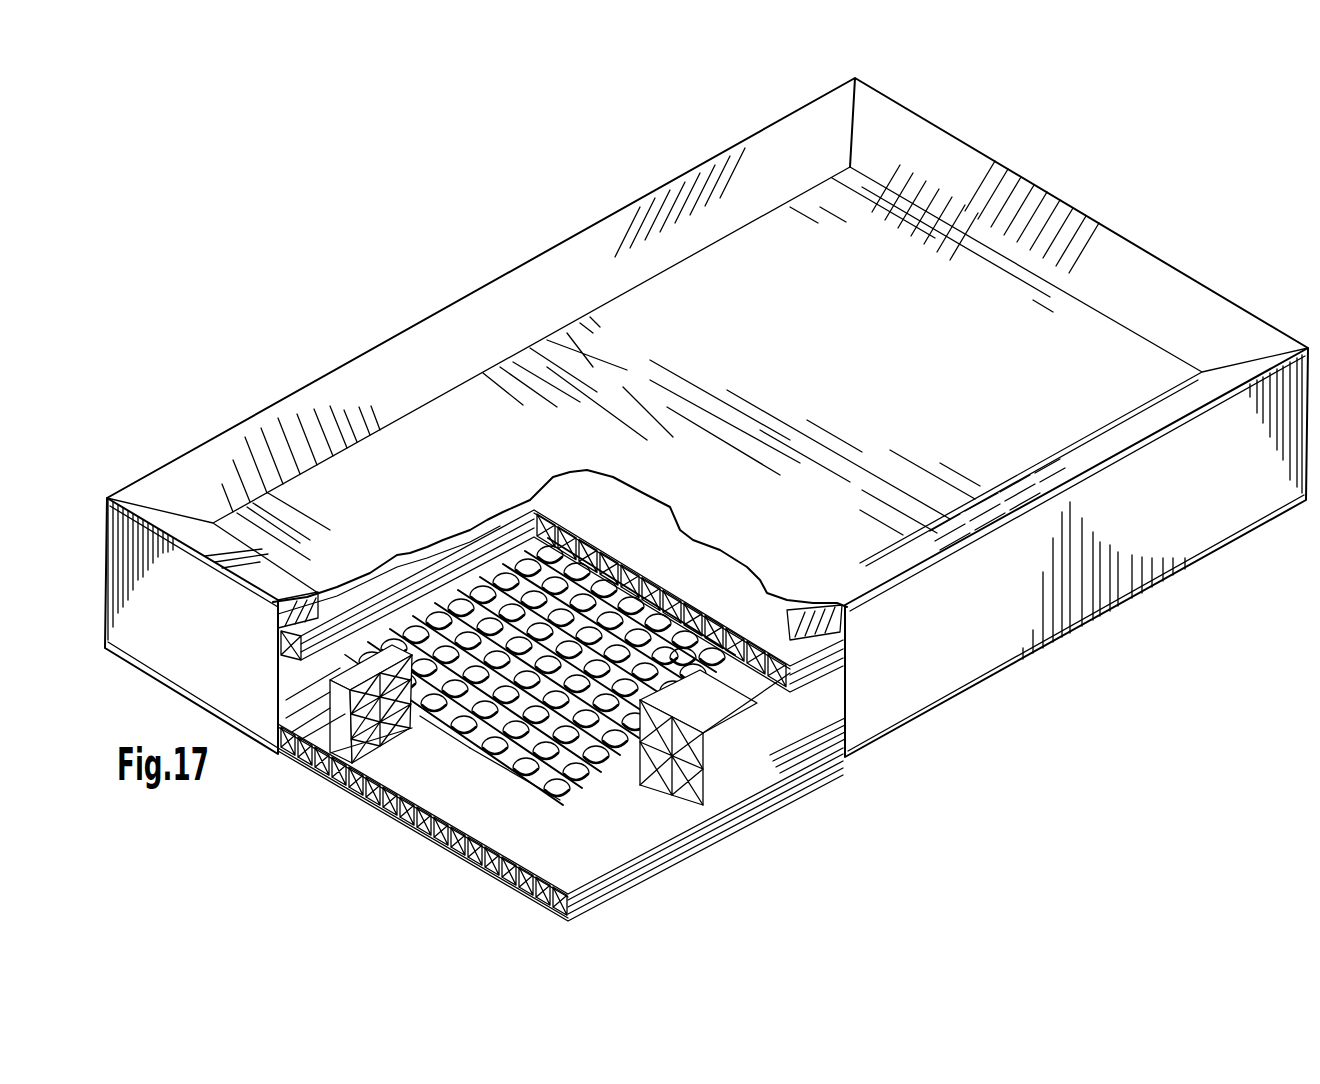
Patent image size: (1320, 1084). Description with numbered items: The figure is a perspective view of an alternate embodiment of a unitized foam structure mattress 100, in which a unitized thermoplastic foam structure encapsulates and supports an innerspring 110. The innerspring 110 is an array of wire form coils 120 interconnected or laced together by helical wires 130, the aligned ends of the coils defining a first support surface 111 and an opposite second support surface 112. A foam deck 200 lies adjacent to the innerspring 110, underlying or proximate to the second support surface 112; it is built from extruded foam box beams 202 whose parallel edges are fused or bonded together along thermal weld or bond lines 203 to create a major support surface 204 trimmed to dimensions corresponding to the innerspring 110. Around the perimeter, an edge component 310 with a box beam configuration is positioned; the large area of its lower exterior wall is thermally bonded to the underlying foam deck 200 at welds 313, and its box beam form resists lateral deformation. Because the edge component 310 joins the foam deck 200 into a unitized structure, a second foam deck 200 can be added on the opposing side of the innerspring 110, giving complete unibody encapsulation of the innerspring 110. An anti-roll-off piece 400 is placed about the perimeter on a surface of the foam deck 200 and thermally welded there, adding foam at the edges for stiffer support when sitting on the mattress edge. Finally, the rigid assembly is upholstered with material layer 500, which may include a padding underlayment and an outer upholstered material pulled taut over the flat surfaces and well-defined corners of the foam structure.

The unitized foam structure mattress 100 is at (445, 235).
The upholstery material layer 500 is at (585, 472).
The foam deck 200 is at (668, 540).
The major support surface 204 is at (708, 565).
The thermal weld or bond lines 203 is at (550, 845).
The extruded foam box beams 202 is at (366, 816).
The anti-roll-off piece 400 is at (852, 632).
The first support surface 111 is at (683, 668).
The innerspring 110 is at (625, 760).
The wire form coils 120 is at (578, 755).
The helical wires 130 is at (512, 800).
The second support surface 112 is at (437, 768).
The edge component 310 is at (743, 766).
The welds 313 is at (340, 737).